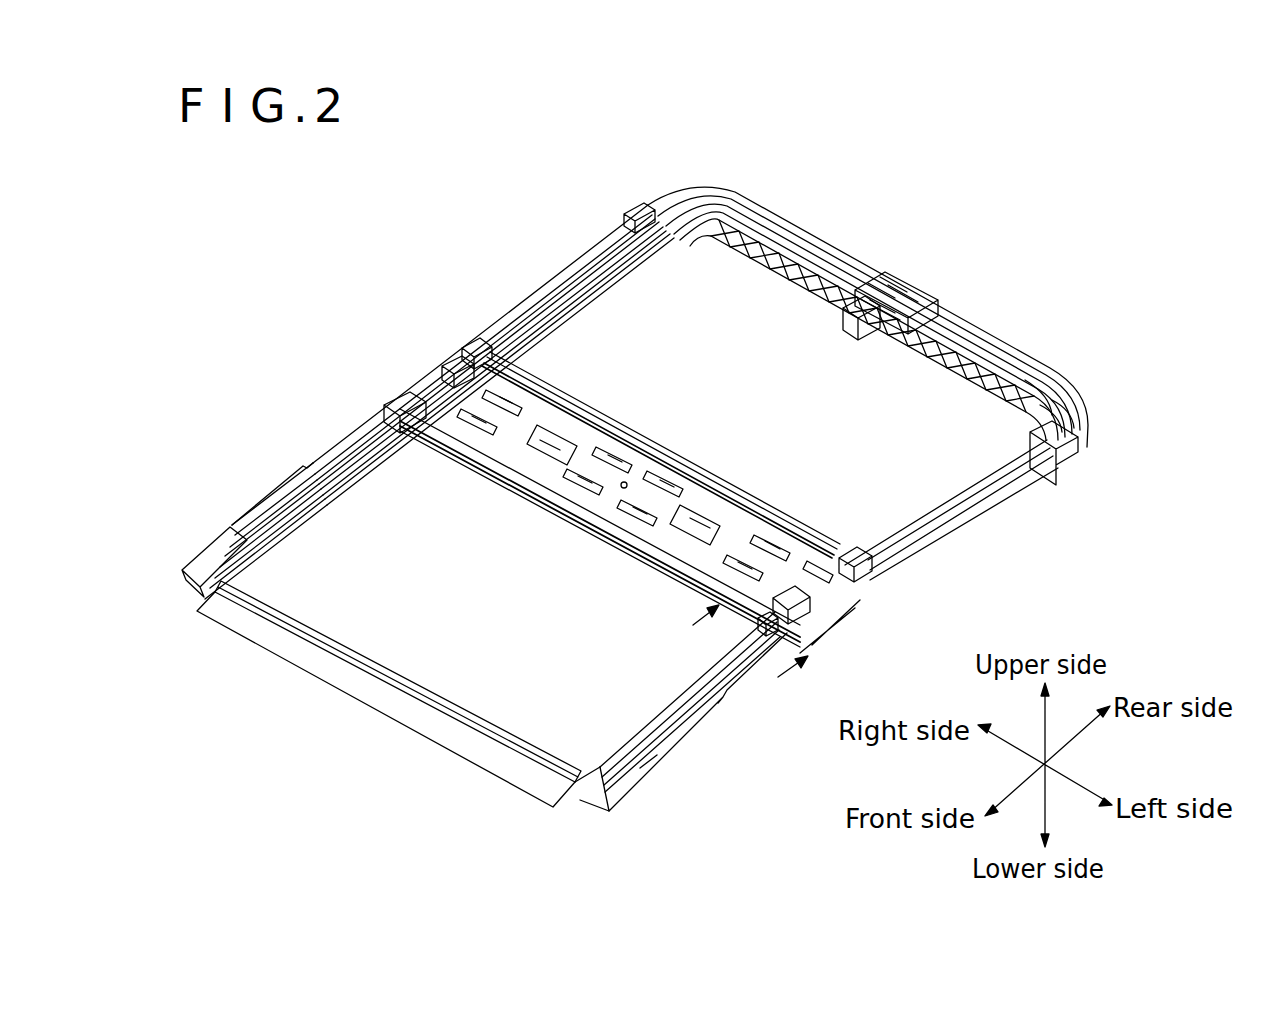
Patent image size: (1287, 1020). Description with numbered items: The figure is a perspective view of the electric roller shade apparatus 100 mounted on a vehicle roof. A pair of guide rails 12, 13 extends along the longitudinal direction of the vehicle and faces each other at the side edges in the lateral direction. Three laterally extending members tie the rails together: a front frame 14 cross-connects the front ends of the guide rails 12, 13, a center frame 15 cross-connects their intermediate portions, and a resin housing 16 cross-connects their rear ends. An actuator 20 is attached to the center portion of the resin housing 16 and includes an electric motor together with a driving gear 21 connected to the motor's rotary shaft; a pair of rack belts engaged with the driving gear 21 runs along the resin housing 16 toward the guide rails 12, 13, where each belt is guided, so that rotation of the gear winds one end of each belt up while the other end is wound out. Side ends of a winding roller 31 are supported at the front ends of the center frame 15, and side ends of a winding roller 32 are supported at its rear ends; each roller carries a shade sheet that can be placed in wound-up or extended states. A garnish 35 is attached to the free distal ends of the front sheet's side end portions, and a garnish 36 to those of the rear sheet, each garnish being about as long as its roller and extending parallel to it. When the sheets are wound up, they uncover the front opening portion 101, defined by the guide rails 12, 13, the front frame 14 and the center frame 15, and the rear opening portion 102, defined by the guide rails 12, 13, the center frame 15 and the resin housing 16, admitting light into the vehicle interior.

The electric roller shade apparatus 100 is at (508, 246).
The front opening portion 101 is at (338, 485).
The rear opening portion 102 is at (577, 307).
The guide rail 12 is at (943, 520).
The guide rail 13 is at (513, 303).
The front frame 14 is at (413, 712).
The center frame 15 is at (440, 380).
The resin housing 16 is at (980, 350).
The actuator 20 is at (910, 275).
The driving gear 21 is at (895, 272).
The winding roller 31 is at (827, 610).
The winding roller 32 is at (853, 580).
The garnish 35 is at (630, 557).
The garnish 36 is at (733, 497).